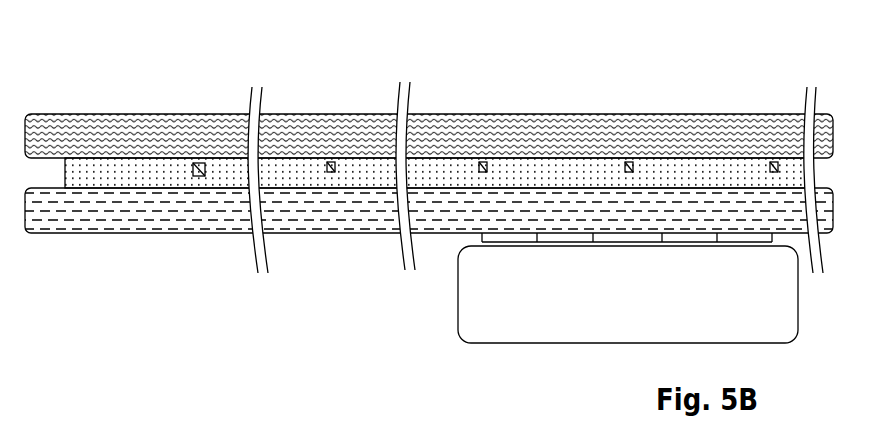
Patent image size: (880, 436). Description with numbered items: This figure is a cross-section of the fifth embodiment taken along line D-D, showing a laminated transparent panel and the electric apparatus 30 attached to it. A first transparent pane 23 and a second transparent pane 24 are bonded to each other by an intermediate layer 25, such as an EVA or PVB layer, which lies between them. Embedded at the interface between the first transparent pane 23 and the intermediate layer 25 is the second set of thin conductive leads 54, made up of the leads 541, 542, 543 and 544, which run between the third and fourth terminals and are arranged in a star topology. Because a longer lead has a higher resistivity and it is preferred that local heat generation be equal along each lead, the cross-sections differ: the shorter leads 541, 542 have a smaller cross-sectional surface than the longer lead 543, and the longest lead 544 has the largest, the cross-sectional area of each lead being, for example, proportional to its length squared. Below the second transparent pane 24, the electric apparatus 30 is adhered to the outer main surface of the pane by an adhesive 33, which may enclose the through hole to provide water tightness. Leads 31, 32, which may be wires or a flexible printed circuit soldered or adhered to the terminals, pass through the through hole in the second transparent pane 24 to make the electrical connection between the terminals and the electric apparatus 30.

The first transparent pane 23 is at (148, 134).
The second transparent pane 24 is at (82, 210).
The intermediate layer 25 is at (100, 178).
The electric apparatus 30 is at (570, 325).
The lead 31 is at (595, 241).
The lead 32 is at (662, 242).
The adhesive 33 is at (495, 238).
The second set of thin conductive leads 54 is at (528, 86).
The lead 541 is at (632, 165).
The lead 542 is at (485, 163).
The lead 543 is at (334, 164).
The lead 544 is at (203, 163).